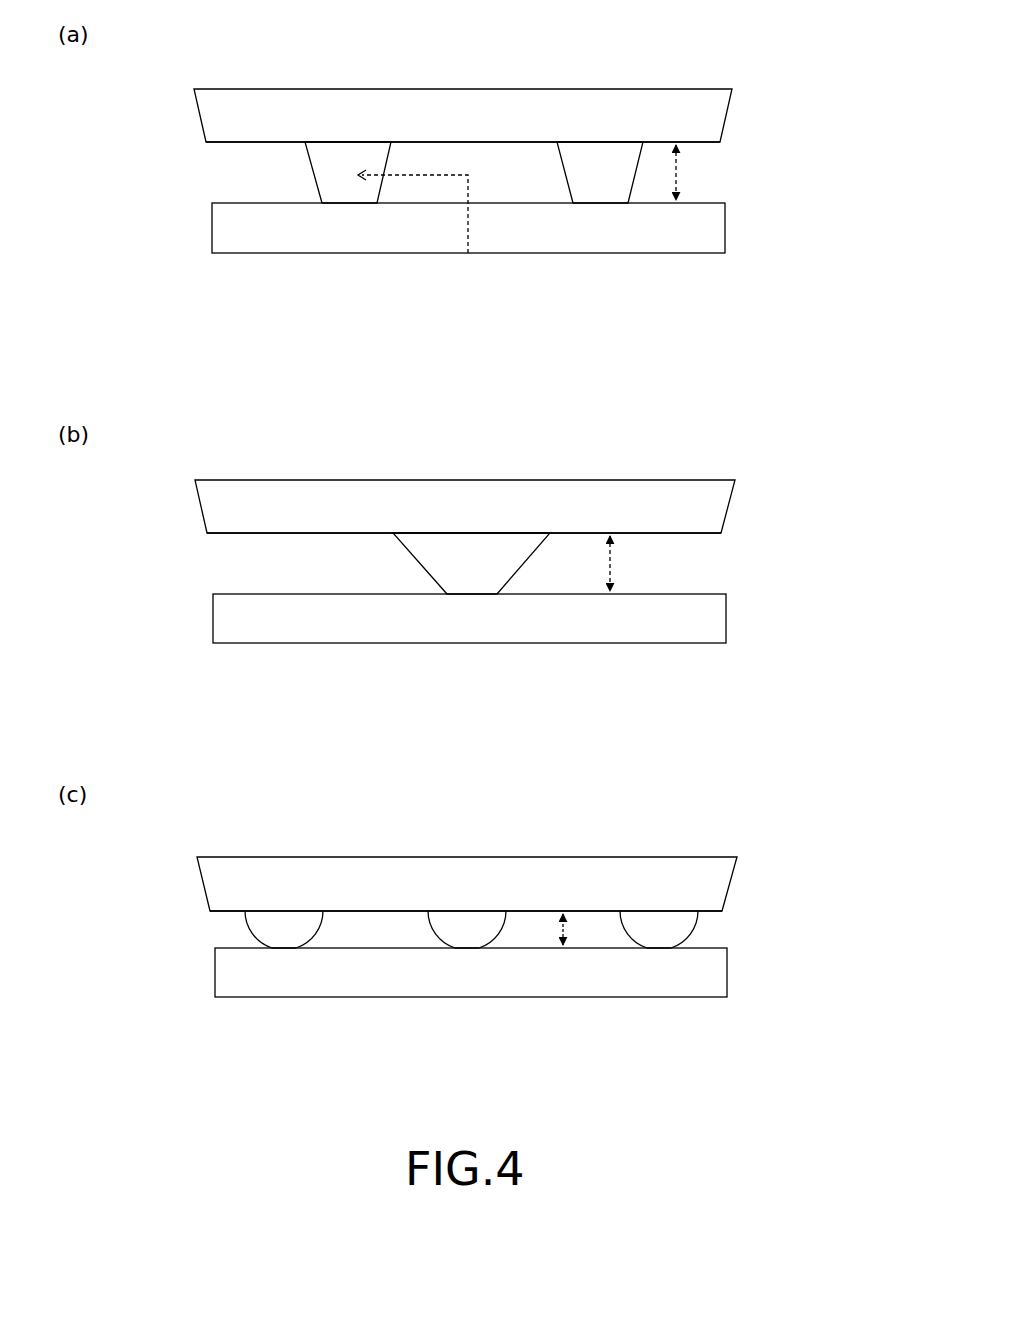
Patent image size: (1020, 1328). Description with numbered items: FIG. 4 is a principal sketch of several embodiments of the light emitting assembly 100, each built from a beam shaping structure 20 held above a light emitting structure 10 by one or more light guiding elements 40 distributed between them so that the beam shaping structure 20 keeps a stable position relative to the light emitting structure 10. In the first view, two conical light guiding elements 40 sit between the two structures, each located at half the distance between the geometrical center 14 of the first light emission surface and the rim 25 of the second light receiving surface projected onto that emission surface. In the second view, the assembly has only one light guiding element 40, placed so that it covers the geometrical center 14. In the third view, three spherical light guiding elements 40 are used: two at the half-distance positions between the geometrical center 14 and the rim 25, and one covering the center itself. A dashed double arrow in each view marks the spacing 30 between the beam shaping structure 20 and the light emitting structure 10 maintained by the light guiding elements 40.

The light emitting assembly 100 is at (459, 62).
The beam shaping structure 20 is at (734, 115).
The light emitting structure 10 is at (727, 227).
The rim of the second light receiving surface 25 is at (198, 140).
The light guiding element 40 is at (338, 173).
The geometrical center of the first light emission surface 14 is at (468, 210).
The gap between substrates 30 is at (682, 177).